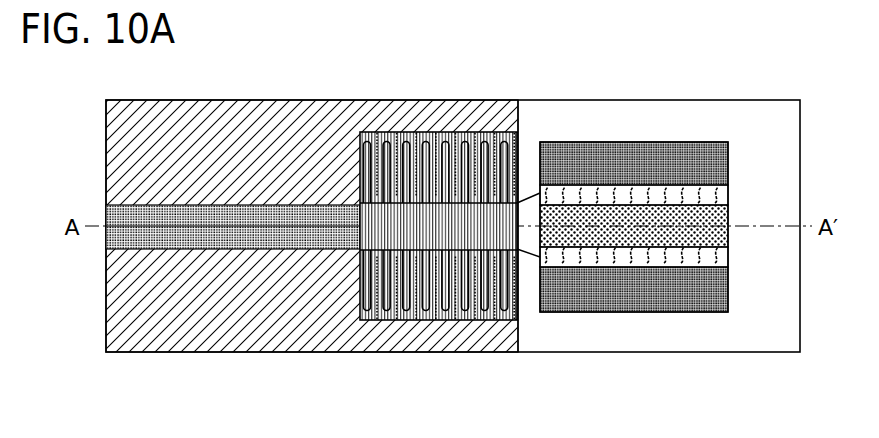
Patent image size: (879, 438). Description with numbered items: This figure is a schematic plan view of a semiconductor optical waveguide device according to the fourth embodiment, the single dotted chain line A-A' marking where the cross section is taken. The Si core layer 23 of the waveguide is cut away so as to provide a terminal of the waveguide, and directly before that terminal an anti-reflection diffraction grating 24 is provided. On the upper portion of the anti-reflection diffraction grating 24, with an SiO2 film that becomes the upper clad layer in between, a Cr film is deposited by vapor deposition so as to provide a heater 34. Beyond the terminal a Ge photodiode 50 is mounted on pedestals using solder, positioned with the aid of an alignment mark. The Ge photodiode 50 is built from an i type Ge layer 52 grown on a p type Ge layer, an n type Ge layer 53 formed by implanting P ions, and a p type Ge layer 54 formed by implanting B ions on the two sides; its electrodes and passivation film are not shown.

The Si core layer 23 is at (243, 249).
The anti-reflection diffraction grating 24 is at (508, 362).
The heater 34 is at (455, 132).
The Ge photodiode 50 is at (669, 227).
The i type Ge layer 52 is at (729, 254).
The n type Ge layer 53 is at (653, 226).
The p type Ge layer 54 is at (729, 283).